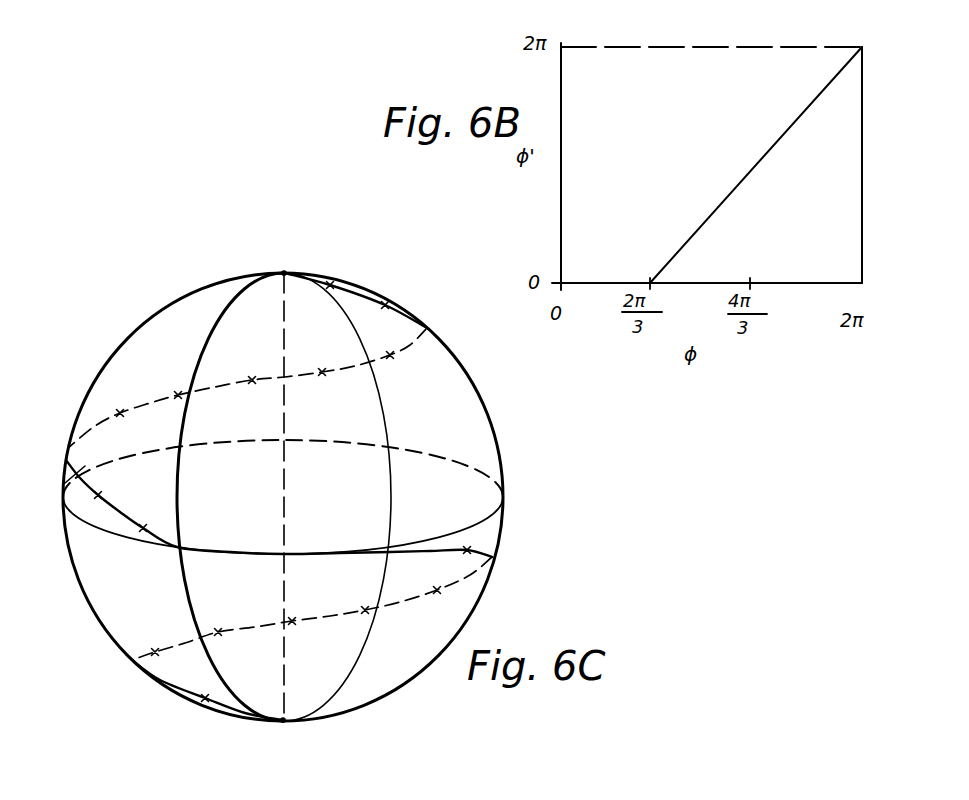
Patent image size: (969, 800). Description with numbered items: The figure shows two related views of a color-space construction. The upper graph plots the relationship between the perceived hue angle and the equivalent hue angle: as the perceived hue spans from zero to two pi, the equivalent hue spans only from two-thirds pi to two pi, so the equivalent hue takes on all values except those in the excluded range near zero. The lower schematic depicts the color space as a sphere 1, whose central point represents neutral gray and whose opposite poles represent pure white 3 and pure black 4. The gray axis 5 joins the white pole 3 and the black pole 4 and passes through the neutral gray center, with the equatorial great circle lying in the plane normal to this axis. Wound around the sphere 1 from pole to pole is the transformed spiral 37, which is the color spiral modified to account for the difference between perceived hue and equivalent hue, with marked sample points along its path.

The sphere 1 is at (498, 439).
The pure white pole 3 is at (283, 270).
The pure black pole 4 is at (283, 722).
The gray axis 5 is at (287, 404).
The transformed spiral 37 is at (124, 510).